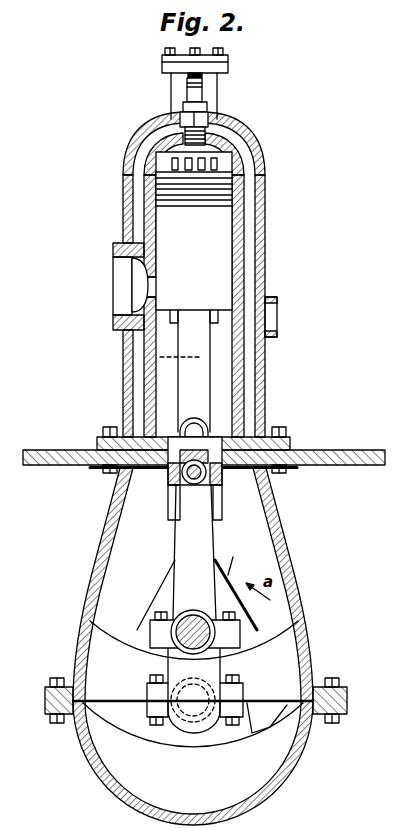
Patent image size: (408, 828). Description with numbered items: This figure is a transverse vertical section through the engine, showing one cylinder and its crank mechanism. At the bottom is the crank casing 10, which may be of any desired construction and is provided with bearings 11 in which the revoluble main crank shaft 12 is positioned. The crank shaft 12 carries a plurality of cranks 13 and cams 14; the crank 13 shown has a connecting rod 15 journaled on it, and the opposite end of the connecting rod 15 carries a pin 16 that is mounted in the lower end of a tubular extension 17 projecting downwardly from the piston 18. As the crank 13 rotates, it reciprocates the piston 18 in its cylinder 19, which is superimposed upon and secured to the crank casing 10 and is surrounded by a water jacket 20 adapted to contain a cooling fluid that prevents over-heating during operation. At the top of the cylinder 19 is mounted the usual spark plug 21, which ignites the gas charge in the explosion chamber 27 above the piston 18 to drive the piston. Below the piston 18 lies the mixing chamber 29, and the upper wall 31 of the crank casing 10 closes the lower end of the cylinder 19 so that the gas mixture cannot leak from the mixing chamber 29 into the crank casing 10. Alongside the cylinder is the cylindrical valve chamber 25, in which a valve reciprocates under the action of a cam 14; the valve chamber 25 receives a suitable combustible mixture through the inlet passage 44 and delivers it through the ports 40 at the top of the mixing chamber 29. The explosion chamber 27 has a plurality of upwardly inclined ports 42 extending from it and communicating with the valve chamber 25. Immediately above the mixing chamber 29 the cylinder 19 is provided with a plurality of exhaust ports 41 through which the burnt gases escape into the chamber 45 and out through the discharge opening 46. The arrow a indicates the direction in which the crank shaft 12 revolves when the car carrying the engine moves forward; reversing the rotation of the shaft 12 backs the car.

The crank casing 10 is at (300, 587).
The bearings 11 is at (192, 735).
The main crank shaft 12 is at (222, 673).
The crank 13 is at (189, 610).
The cam 14 is at (270, 725).
The connecting rod 15 is at (208, 540).
The pin 16 is at (187, 486).
The tubular extension 17 is at (200, 365).
The piston 18 is at (215, 253).
The cylinder 19 is at (237, 227).
The water jacket 20 is at (248, 267).
The spark plug 21 is at (185, 90).
The valve chamber 25 is at (219, 91).
The explosion chamber 27 is at (133, 167).
The mixing chamber 29 is at (167, 385).
The upper wall 31 is at (306, 450).
The ports 40 is at (143, 328).
The exhaust ports 41 is at (150, 287).
The ports 42 is at (218, 163).
The inlet passage 44 is at (277, 313).
The chamber 45 is at (138, 292).
The discharge opening 46 is at (115, 270).